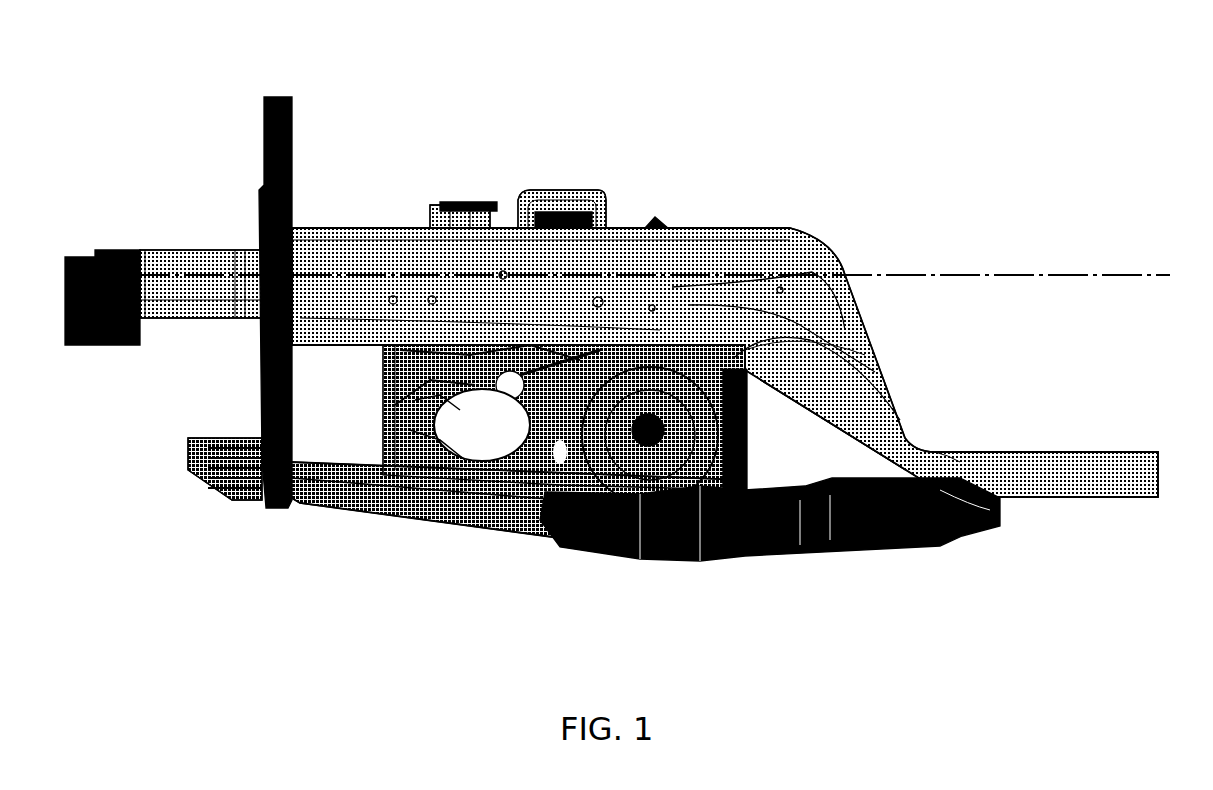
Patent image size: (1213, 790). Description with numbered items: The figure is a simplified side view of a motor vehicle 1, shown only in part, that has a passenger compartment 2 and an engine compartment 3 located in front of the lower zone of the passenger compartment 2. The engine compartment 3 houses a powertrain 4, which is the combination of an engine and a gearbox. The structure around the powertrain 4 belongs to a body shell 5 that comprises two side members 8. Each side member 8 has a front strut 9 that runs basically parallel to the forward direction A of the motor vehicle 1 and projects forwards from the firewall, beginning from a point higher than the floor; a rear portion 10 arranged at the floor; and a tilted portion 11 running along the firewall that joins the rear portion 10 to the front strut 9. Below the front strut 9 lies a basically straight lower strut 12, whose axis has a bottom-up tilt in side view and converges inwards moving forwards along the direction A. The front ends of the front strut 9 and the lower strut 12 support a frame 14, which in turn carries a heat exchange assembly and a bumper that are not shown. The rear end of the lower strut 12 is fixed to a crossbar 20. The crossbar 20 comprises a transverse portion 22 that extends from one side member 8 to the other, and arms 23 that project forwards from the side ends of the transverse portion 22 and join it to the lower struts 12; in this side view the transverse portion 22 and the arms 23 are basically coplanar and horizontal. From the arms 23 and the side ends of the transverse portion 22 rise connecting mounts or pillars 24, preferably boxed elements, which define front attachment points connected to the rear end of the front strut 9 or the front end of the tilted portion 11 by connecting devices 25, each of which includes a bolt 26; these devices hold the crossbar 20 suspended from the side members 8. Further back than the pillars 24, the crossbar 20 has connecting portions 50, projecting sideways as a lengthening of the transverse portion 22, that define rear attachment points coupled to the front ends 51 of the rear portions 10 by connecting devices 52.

The motor vehicle 1 is at (1102, 102).
The passenger compartment 2 is at (740, 298).
The forward direction A is at (1058, 275).
The engine compartment 3 is at (608, 166).
The powertrain 4 is at (573, 542).
The body shell 5 is at (794, 228).
The side member 8 is at (346, 218).
The front strut 9 is at (396, 248).
The rear portion 10 is at (1142, 480).
The tilted portion 11 is at (873, 410).
The lower strut 12 is at (450, 512).
The frame 14 is at (268, 147).
The crossbar 20 is at (770, 567).
The transverse portion 22 is at (825, 556).
The arm 23 is at (648, 556).
The pillar 24 is at (749, 462).
The connecting device 25 is at (863, 356).
The bolt 26 is at (735, 352).
The connecting portion 50 is at (955, 546).
The front end 51 is at (950, 463).
The connecting device 52 is at (962, 487).